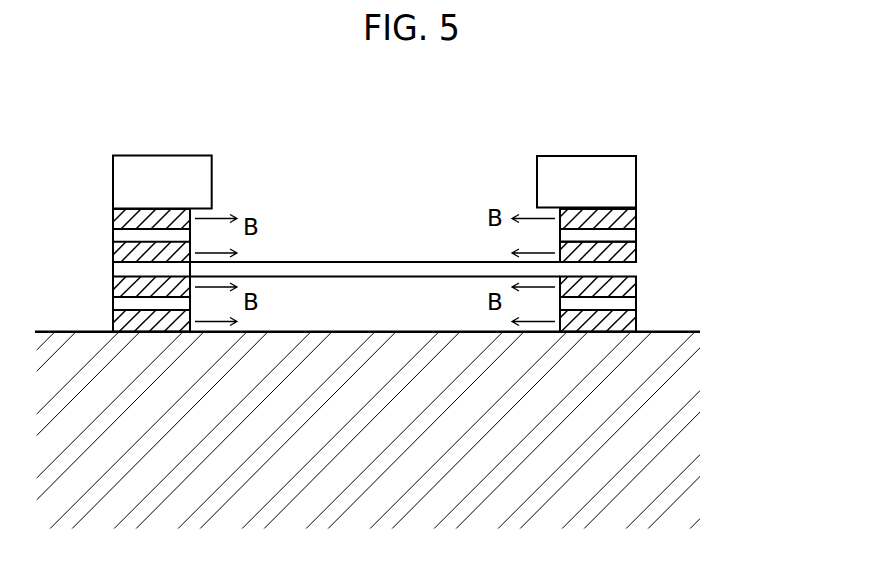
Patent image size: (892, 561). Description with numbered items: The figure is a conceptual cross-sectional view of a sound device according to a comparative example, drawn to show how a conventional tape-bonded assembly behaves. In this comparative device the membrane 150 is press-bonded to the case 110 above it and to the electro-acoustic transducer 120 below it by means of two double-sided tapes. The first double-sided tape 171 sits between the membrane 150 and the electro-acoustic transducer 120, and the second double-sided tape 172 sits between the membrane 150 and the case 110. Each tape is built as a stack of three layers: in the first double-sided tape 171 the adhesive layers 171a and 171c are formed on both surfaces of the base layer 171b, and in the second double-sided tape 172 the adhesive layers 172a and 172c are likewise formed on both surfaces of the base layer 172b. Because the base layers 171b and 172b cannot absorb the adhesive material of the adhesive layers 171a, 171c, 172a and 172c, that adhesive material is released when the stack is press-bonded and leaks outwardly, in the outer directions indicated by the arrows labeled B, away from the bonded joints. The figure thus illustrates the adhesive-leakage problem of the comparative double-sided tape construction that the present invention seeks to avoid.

The case 110 is at (570, 162).
The electro-acoustic transducer 120 is at (633, 442).
The membrane 150 is at (320, 268).
The first double-sided tape 171 is at (660, 290).
The adhesive layer 171a is at (623, 320).
The base layer 171b is at (626, 303).
The adhesive layer 171c is at (628, 287).
The second double-sided tape 172 is at (661, 213).
The adhesive layer 172a is at (623, 253).
The base layer 172b is at (623, 235).
The adhesive layer 172c is at (618, 220).